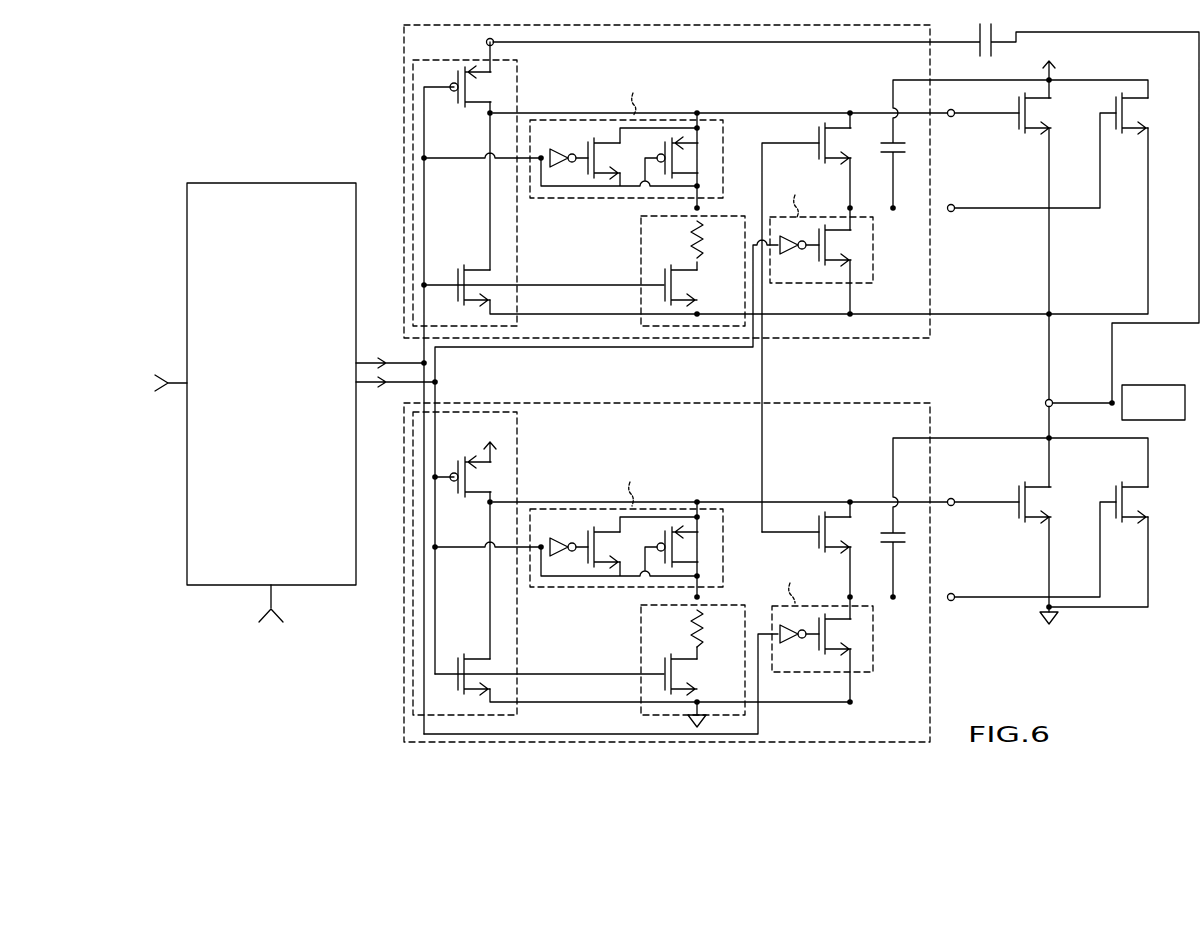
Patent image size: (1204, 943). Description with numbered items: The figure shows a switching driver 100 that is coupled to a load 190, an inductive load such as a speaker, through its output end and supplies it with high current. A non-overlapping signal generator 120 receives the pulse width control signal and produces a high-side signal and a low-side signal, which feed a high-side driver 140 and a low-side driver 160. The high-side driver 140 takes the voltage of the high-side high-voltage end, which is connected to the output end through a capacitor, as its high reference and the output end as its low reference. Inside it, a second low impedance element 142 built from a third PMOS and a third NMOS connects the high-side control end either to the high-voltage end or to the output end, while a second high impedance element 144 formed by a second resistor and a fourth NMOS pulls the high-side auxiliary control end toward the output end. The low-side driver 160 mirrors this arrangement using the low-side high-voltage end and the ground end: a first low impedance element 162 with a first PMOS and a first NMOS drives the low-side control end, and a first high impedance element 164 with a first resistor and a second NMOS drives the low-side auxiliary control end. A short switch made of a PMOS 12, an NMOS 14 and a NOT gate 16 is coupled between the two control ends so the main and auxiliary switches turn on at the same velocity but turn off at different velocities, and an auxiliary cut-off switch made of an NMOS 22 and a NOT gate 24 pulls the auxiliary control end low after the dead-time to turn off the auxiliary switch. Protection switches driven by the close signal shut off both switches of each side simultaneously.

The switching driver 100 is at (202, 107).
The non-overlapping signal generator 120 is at (285, 183).
The high-side driver 140 is at (404, 95).
The second low impedance element 142 is at (517, 70).
The second high impedance element 144 is at (640, 240).
The low-side driver 160 is at (404, 696).
The first low impedance element 162 is at (517, 437).
The first high impedance element 164 is at (640, 632).
The load 190 is at (1153, 385).
The PMOS 12 is at (686, 352).
The NMOS 14 is at (616, 353).
The NOT gate 16 is at (565, 341).
The NMOS 22 is at (845, 440).
The NOT gate 24 is at (797, 452).